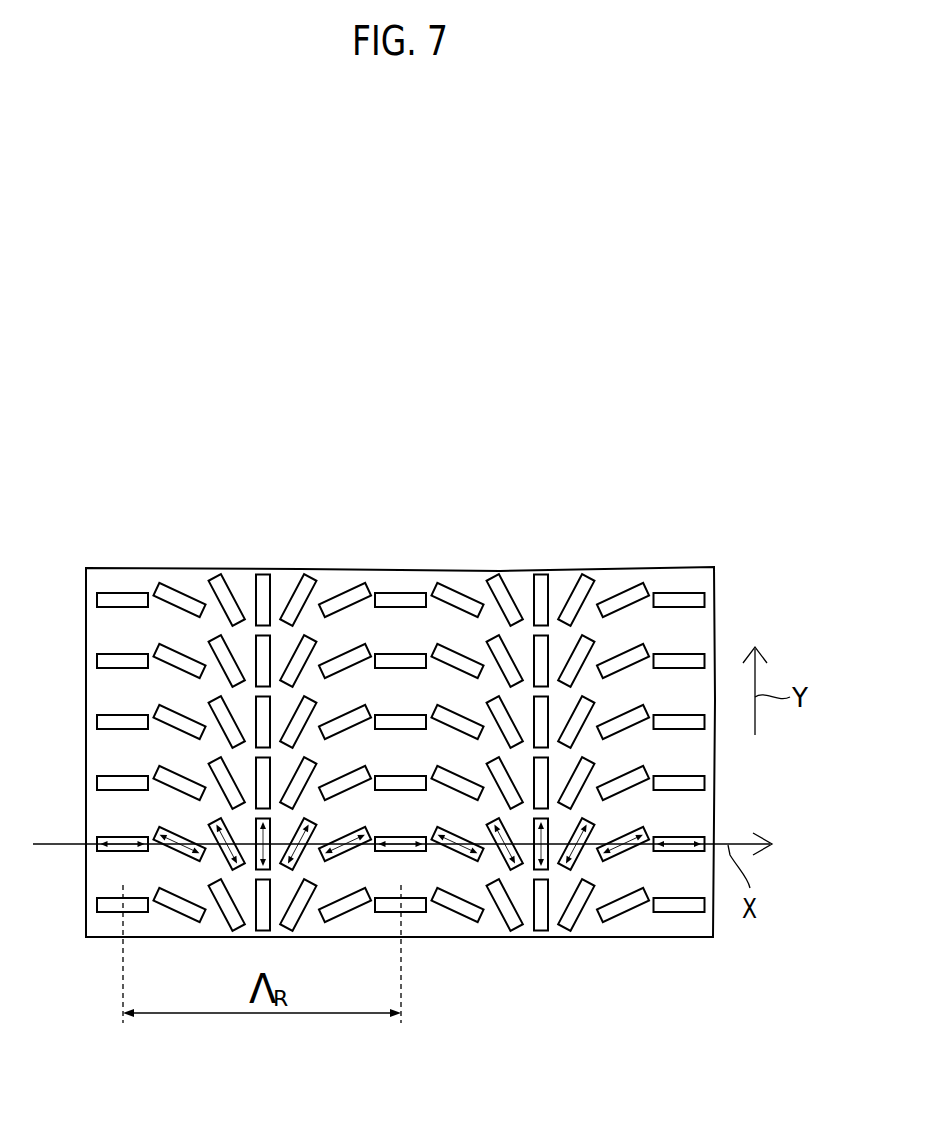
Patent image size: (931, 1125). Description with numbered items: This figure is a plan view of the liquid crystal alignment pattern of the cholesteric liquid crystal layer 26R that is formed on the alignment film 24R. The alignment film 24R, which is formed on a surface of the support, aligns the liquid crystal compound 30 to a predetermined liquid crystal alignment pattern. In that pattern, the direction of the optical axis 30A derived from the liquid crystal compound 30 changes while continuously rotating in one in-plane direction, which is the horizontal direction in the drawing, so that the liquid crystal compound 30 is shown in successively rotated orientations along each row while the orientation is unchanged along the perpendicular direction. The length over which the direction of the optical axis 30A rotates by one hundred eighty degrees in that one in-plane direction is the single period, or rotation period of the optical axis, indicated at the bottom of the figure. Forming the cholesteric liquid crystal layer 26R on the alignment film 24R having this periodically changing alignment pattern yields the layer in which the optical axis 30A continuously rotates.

The alignment film 24R is at (113, 752).
The cholesteric liquid crystal layer 26R is at (570, 538).
The liquid crystal compound 30 is at (120, 600).
The optical axis 30A is at (630, 833).